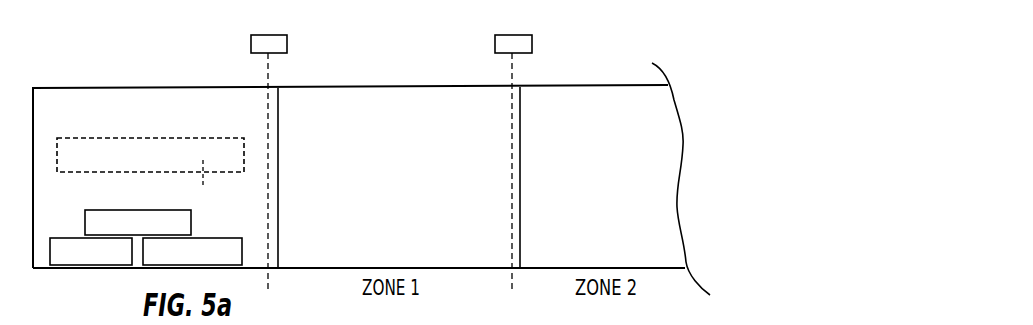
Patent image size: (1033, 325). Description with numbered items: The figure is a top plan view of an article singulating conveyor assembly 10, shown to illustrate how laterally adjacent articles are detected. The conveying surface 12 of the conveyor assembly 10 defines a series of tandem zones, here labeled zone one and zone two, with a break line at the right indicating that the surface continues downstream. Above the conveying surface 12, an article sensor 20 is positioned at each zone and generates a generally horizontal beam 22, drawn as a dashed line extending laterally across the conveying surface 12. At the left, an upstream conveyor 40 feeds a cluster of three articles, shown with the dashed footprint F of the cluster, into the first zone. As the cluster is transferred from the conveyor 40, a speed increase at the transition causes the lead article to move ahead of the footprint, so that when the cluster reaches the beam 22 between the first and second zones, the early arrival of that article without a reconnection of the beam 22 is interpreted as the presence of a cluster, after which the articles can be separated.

The article singulating conveyor assembly 10 is at (637, 86).
The conveying surface 12 is at (679, 192).
The article sensor 20 is at (280, 34).
The beam 22 is at (268, 68).
The conveyor 40 is at (53, 268).